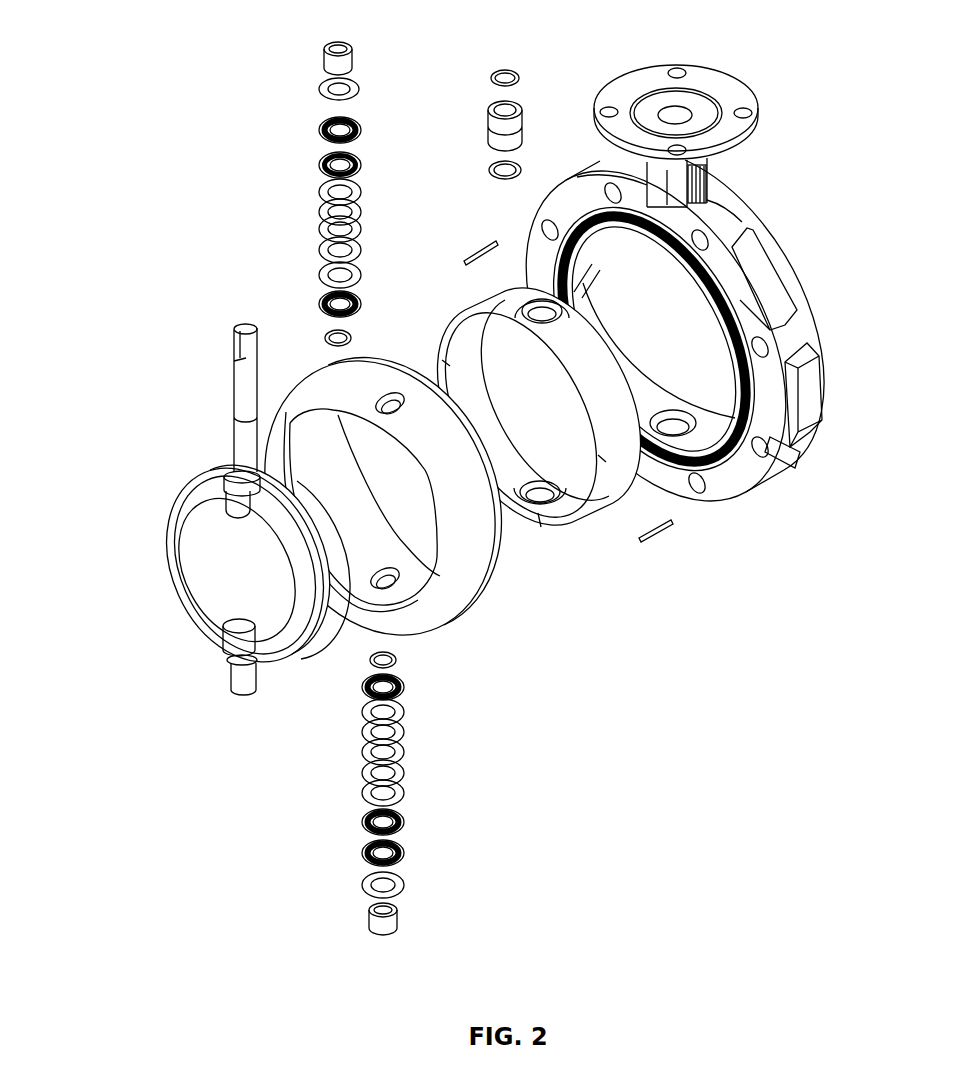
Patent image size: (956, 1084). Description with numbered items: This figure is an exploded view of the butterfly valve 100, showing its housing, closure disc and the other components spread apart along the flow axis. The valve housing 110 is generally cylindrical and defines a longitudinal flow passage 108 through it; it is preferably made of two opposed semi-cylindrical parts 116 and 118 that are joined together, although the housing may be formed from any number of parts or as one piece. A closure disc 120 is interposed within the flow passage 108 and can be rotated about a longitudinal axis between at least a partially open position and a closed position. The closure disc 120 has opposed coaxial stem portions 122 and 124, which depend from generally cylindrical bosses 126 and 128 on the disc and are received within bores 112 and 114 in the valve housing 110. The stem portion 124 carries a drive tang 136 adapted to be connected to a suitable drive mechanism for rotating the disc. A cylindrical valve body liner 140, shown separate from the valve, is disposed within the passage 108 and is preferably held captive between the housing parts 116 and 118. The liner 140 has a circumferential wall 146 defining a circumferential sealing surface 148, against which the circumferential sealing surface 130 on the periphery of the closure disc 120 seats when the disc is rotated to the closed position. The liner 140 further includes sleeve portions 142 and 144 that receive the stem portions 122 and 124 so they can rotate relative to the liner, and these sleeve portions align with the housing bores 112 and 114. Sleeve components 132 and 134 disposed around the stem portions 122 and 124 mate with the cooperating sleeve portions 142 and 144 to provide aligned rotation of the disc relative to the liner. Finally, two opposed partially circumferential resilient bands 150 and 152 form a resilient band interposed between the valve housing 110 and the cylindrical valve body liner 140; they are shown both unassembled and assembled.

The valve 100 is at (614, 853).
The flow passage 108 is at (643, 345).
The valve housing 110 is at (679, 319).
The bore 112 is at (676, 436).
The bore 114 is at (695, 222).
The semi-cylindrical part 116 is at (770, 363).
The semi-cylindrical part 118 is at (772, 438).
The closure disc 120 is at (225, 570).
The stem portion 122 is at (240, 687).
The stem portion 124 is at (240, 447).
The boss 126 is at (227, 650).
The boss 128 is at (232, 498).
The circumferential sealing surface 130 is at (333, 633).
The sleeve component 132 is at (242, 665).
The sleeve component 134 is at (224, 472).
The drive tang 136 is at (240, 345).
The cylindrical valve body liner 140 is at (392, 489).
The sleeve portion 142 is at (393, 587).
The sleeve portion 144 is at (383, 397).
The circumferential wall 146 is at (468, 548).
The circumferential sealing surface 148 is at (315, 443).
The partially circumferential resilient band 150 is at (531, 434).
The partially circumferential resilient band 152 is at (535, 290).